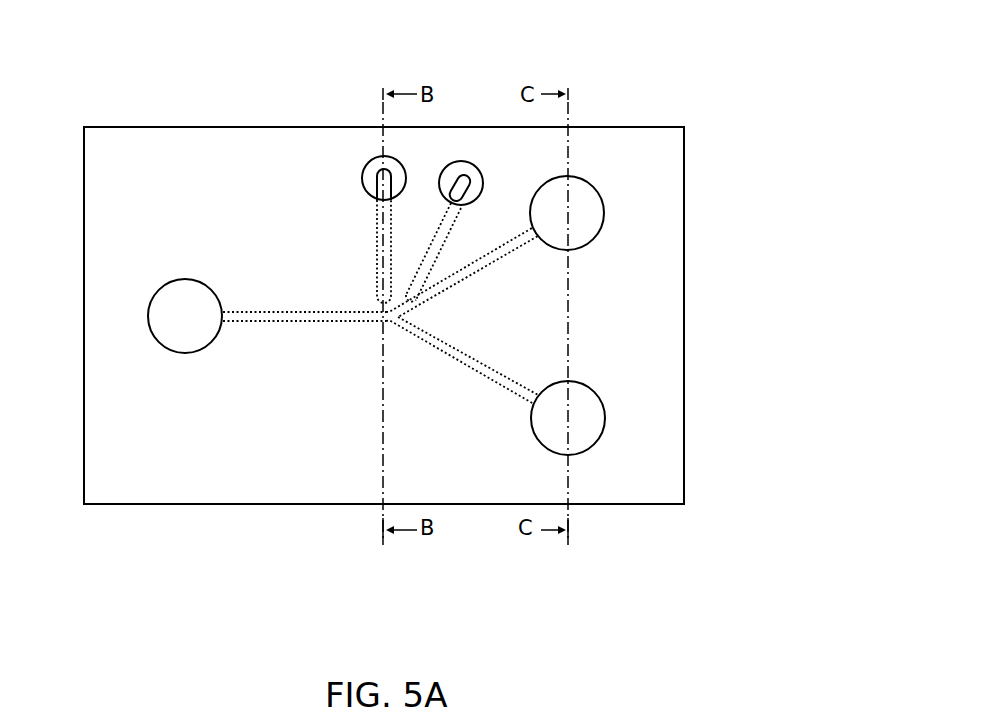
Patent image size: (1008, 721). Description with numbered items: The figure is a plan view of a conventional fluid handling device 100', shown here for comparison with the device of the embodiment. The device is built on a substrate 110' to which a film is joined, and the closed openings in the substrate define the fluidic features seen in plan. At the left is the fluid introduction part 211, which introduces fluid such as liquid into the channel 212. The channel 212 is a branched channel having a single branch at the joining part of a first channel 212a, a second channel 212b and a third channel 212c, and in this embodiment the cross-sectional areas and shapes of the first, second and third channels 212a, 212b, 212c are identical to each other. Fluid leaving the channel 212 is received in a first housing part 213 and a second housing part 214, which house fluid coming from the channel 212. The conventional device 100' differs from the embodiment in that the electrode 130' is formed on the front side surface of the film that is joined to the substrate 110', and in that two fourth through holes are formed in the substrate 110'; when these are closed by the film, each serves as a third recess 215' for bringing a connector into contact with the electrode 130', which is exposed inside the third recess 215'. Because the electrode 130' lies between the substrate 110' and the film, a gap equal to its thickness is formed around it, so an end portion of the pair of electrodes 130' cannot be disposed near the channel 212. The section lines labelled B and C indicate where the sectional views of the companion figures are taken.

The conventional fluid handling device 100' is at (421, 252).
The substrate 110' is at (421, 315).
The fluid introduction part 211 is at (187, 279).
The channel 212 is at (395, 418).
The first channel 212a is at (377, 325).
The second channel 212b is at (427, 300).
The third channel 212c is at (465, 364).
The first housing part 213 is at (593, 187).
The second housing part 214 is at (587, 450).
The third recess 215' is at (436, 104).
The electrode 130' is at (438, 138).